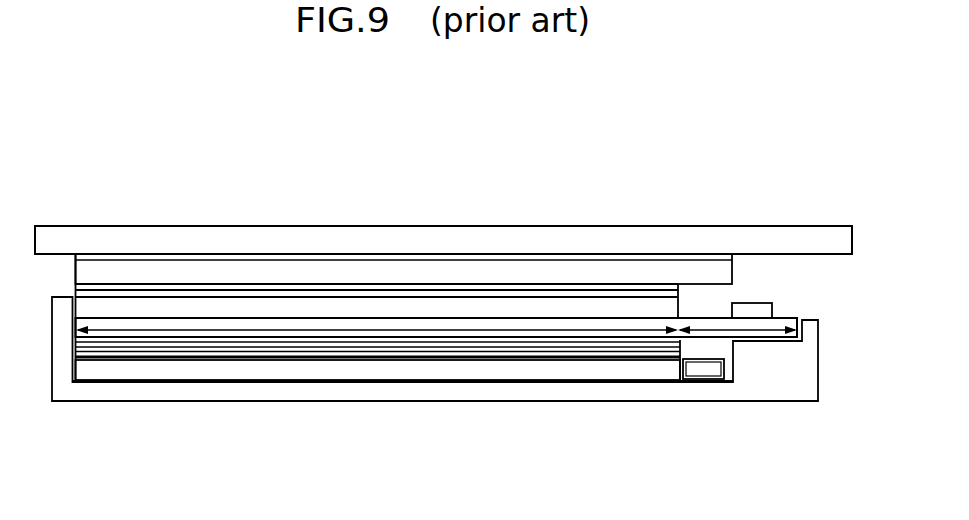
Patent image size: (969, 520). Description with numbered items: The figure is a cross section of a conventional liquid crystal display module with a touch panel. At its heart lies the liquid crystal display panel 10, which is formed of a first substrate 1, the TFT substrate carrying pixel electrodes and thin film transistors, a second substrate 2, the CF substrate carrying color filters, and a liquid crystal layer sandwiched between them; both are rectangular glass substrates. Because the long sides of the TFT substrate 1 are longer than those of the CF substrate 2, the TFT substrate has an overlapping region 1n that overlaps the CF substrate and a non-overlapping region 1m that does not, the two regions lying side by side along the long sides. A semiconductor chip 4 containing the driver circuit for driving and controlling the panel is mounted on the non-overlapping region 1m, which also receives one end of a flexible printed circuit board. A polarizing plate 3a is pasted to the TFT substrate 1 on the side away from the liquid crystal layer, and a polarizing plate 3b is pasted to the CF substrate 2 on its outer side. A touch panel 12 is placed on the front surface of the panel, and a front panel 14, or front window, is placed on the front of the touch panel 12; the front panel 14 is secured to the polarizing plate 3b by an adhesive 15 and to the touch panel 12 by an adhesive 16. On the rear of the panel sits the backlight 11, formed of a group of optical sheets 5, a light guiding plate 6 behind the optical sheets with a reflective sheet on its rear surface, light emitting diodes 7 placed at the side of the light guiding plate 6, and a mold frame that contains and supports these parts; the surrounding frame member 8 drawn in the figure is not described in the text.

The first substrate 1 is at (258, 318).
The overlapping region 1n is at (555, 333).
The non-overlapping region 1m is at (758, 334).
The second substrate 2 is at (203, 305).
The polarizing plate 3a is at (153, 344).
The polarizing plate 3b is at (95, 290).
The semiconductor chip 4 is at (757, 312).
The group of optical sheets 5 is at (288, 348).
The light guiding plate 6 is at (220, 367).
The light emitting diodes 7 is at (693, 373).
The frame 8 is at (310, 390).
The liquid crystal display panel 10 is at (344, 293).
The backlight 11 is at (350, 386).
The touch panel 12 is at (495, 277).
The front panel 14 is at (590, 237).
The adhesive 15 is at (447, 290).
The adhesive 16 is at (547, 256).